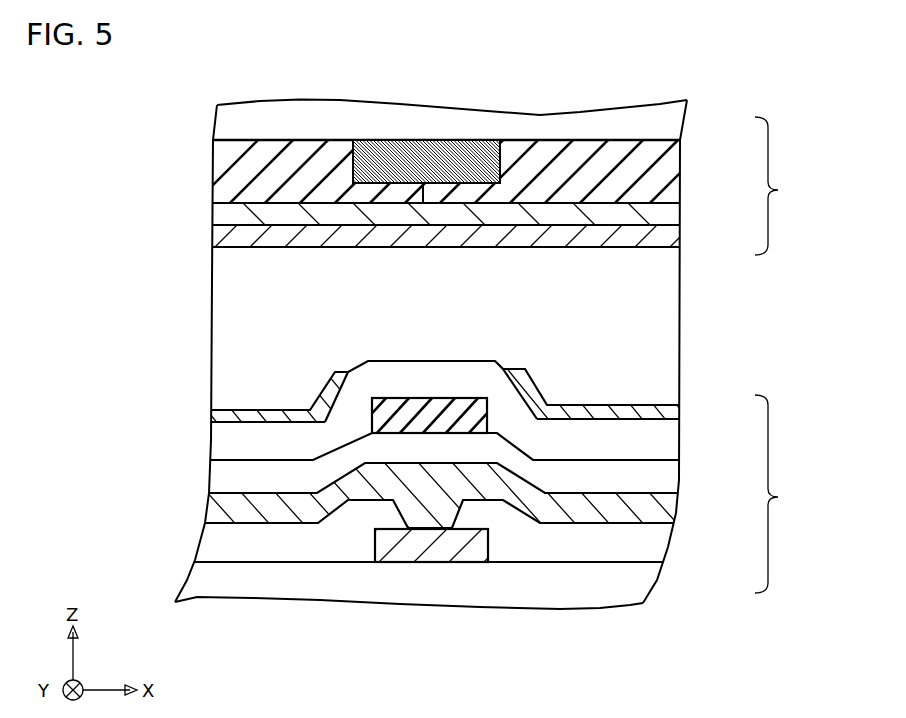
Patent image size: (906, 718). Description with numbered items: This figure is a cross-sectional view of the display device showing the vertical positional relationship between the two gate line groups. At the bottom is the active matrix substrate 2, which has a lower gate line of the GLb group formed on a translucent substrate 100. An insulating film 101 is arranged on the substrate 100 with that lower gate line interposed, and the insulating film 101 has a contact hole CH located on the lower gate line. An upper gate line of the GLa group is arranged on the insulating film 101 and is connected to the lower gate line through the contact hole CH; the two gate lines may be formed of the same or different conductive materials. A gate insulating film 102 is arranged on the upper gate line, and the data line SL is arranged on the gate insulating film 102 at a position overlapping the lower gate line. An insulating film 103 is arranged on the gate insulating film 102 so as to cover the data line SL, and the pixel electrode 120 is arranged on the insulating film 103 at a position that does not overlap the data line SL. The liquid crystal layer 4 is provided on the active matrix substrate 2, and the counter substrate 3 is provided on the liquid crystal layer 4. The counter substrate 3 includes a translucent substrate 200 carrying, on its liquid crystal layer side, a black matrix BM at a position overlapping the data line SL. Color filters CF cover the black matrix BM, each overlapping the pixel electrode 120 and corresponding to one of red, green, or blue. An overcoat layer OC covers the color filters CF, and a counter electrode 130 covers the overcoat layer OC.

The substrate 200 is at (667, 123).
The color filters CF is at (667, 174).
The black matrix BM is at (452, 155).
The overcoat layer OC is at (667, 213).
The counter electrode 130 is at (667, 237).
The counter substrate 3 is at (780, 186).
The liquid crystal layer 4 is at (667, 323).
The data line SL is at (420, 398).
The pixel electrode 120 is at (218, 410).
The insulating film 103 is at (655, 437).
The gate insulating film 102 is at (650, 469).
The contact hole CH is at (419, 520).
The insulating film 101 is at (635, 546).
The substrate 100 is at (630, 585).
The active matrix substrate 2 is at (780, 494).